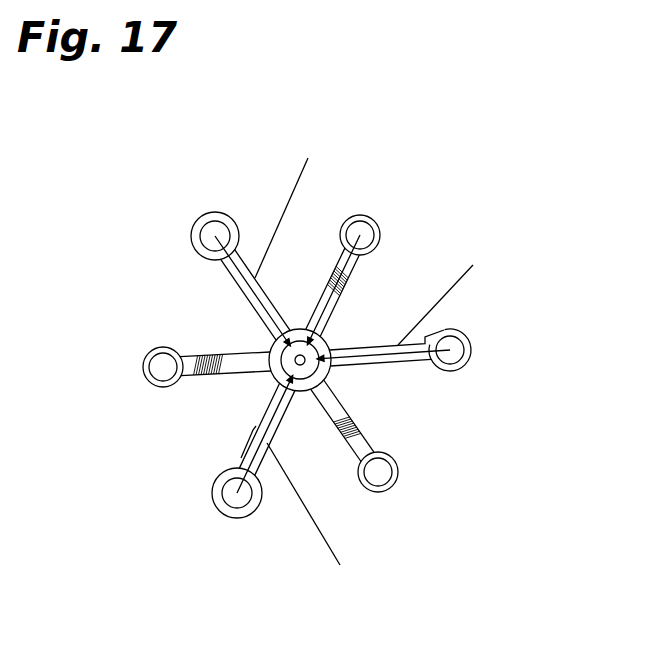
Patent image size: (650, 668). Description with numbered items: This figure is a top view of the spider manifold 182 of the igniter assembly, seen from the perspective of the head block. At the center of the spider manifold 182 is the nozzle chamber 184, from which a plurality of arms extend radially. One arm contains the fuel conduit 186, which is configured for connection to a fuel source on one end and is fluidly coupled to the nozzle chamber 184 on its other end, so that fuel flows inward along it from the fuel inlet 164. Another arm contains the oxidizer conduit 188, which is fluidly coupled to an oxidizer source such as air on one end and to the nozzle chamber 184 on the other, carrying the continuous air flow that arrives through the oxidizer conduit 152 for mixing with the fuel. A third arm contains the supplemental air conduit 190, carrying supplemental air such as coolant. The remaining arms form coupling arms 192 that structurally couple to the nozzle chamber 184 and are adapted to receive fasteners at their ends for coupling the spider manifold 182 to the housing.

The spider manifold 182 is at (177, 173).
The oxidizer conduit 152 is at (203, 210).
The fuel inlet port 164 is at (462, 375).
The nozzle chamber 184 is at (325, 332).
The fuel conduit 186 is at (390, 362).
The oxidizer conduit 188 is at (247, 300).
The supplemental air conduit 190 is at (257, 423).
The coupling arms 192 is at (342, 270).